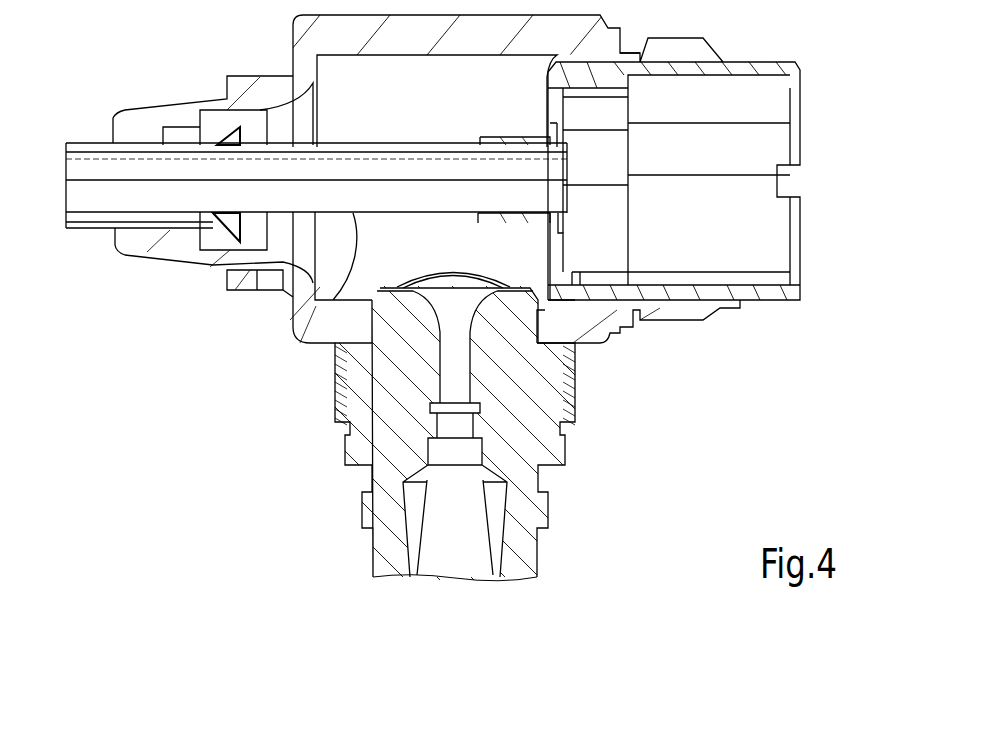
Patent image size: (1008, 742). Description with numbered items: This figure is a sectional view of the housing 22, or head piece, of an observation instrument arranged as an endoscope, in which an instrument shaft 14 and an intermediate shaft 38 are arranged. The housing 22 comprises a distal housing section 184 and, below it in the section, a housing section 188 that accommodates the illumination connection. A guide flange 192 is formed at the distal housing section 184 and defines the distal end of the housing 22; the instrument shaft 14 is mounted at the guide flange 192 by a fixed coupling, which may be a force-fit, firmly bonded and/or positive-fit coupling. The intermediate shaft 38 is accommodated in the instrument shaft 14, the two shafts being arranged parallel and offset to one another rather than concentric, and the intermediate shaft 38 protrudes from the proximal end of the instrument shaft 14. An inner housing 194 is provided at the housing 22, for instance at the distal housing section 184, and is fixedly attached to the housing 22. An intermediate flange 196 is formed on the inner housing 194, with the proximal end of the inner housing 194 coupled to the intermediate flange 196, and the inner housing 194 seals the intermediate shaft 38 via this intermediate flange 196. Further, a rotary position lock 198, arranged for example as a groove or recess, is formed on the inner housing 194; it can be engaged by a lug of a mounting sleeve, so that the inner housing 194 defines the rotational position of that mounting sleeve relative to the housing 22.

The instrument shaft 14 is at (92, 230).
The housing 22 is at (213, 84).
The intermediate shaft 38 is at (350, 230).
The distal housing section 184 is at (337, 37).
The housing section 188 is at (540, 507).
The guide flange 192 is at (138, 242).
The inner housing 194 is at (737, 63).
The intermediate flange 196 is at (520, 137).
The rotary position lock 198 is at (598, 277).